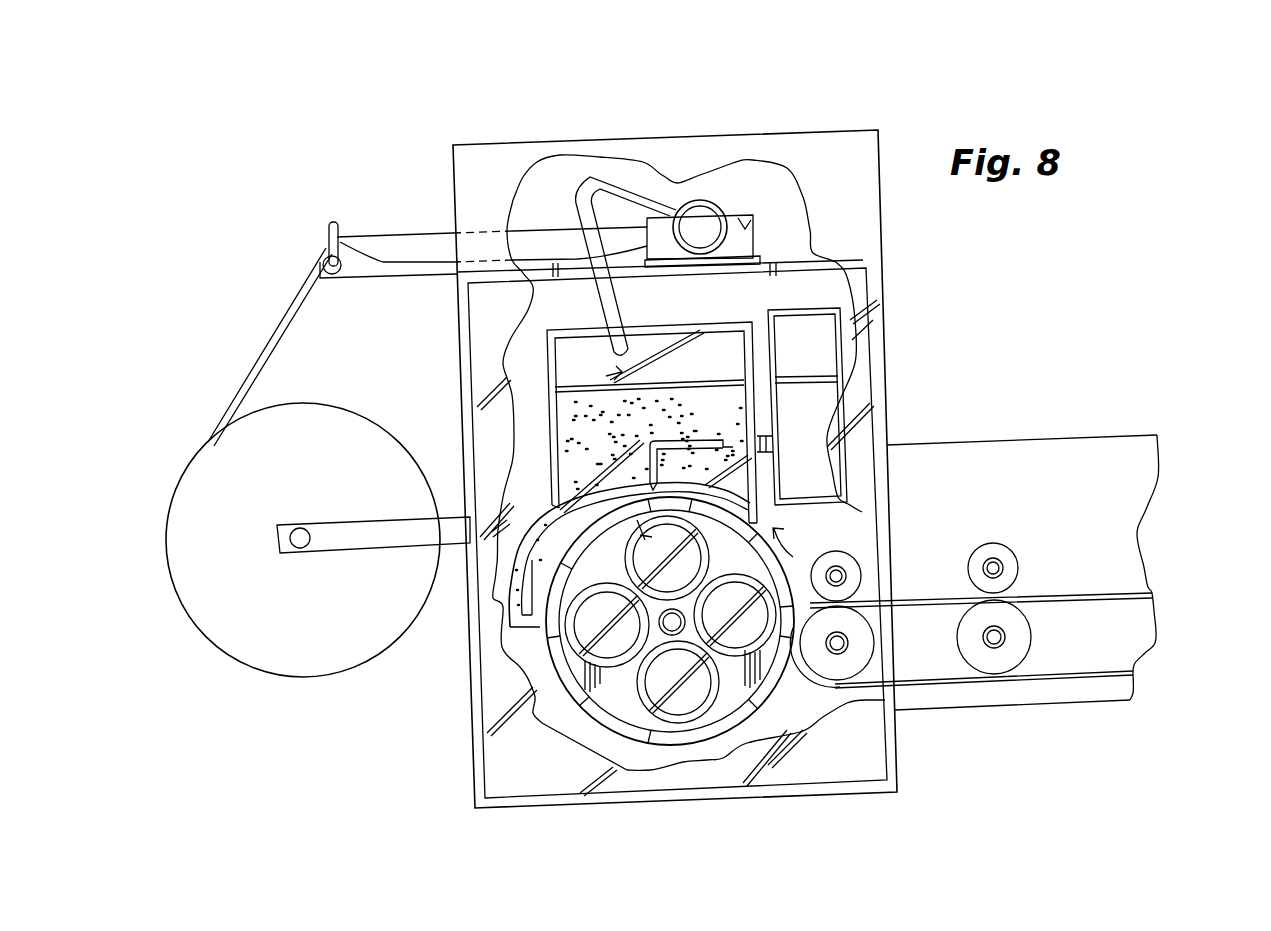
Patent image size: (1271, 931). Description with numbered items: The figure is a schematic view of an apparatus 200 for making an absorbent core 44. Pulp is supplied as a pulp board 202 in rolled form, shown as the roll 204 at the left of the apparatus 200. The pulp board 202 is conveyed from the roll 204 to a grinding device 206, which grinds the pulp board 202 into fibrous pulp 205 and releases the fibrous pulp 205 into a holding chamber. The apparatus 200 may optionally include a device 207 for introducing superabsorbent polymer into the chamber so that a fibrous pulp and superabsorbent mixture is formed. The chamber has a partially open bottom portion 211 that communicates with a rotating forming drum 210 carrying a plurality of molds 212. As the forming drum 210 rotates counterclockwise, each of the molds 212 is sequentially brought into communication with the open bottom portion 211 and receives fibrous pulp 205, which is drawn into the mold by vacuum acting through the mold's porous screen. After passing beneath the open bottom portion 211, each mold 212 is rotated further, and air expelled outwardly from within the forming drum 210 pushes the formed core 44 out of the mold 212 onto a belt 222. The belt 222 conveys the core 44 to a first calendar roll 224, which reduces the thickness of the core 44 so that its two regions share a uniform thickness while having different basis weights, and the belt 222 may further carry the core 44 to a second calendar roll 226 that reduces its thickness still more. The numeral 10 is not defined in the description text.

The apparatus 200 is at (280, 165).
The pulp board 202 is at (267, 343).
The roll 204 is at (314, 646).
The fibrous pulp 205 is at (555, 382).
The grinding device 206 is at (742, 230).
The device for introducing superabsorbent polymer 207 is at (753, 423).
The partially open bottom portion 211 is at (753, 467).
The rotating forming drum 210 is at (633, 705).
The molds 212 is at (787, 660).
The product units 10 is at (634, 460).
The belt 222 is at (1143, 587).
The absorbent core 44 is at (1067, 592).
The first calendar roll 224 is at (852, 562).
The second calendar roll 226 is at (993, 548).